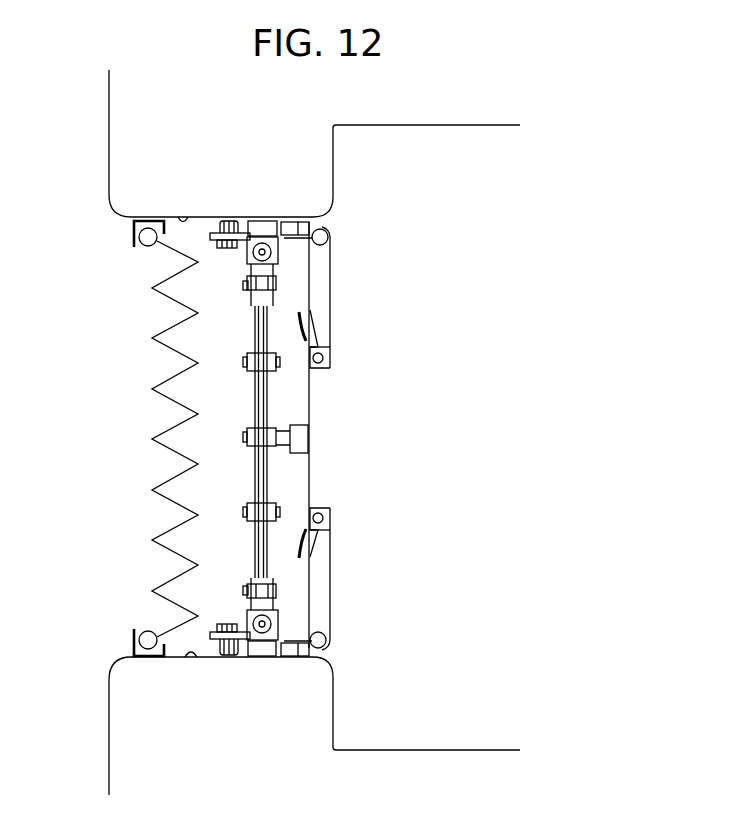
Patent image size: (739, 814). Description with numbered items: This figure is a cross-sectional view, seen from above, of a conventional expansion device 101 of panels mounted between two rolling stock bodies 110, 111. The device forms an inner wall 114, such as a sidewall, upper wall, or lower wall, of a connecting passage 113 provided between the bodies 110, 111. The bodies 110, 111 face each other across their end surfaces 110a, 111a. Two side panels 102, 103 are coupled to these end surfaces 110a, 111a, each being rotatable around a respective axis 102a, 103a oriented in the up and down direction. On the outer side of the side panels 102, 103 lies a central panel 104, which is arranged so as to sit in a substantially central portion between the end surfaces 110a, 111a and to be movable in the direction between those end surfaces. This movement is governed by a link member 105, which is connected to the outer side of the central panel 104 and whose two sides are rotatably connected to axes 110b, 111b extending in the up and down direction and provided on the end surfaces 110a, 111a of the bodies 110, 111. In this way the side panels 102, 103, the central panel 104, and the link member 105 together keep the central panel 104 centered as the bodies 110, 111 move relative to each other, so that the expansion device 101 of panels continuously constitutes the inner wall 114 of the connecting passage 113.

The expansion device of panels 101 is at (348, 393).
The side panel 102 is at (333, 291).
The axis 102a is at (328, 237).
The side panel 103 is at (333, 576).
The axis 103a is at (326, 640).
The central panel 104 is at (310, 437).
The link member 105 is at (248, 413).
The body 110 is at (333, 185).
The end surface 110a is at (181, 215).
The axis 110b is at (245, 258).
The body 111 is at (333, 705).
The end surface 111a is at (191, 660).
The axis 111b is at (247, 620).
The connecting passage 113 is at (497, 444).
The inner wall 114 is at (348, 483).